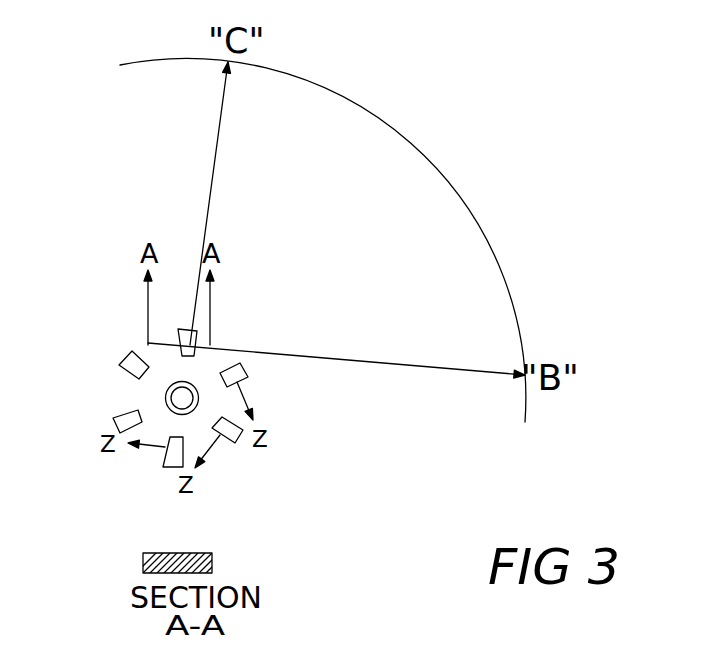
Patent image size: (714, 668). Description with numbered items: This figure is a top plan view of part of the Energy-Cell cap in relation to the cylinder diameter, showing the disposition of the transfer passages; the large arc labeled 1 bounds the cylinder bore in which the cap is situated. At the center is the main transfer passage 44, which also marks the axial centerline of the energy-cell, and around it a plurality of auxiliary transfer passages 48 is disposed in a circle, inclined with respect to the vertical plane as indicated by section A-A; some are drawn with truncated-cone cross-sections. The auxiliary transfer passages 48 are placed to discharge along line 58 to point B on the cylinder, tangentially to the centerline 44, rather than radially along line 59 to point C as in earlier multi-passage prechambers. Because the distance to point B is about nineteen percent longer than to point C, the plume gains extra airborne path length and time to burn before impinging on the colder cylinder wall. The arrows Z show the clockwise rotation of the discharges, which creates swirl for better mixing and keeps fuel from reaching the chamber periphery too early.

The rotary drum / housing wall 1 is at (478, 216).
The main transfer passage 44 is at (195, 385).
The auxiliary transfer passages 48 is at (118, 361).
The discharge line to point B 58 is at (353, 359).
The radial discharge line to point C 59 is at (213, 190).